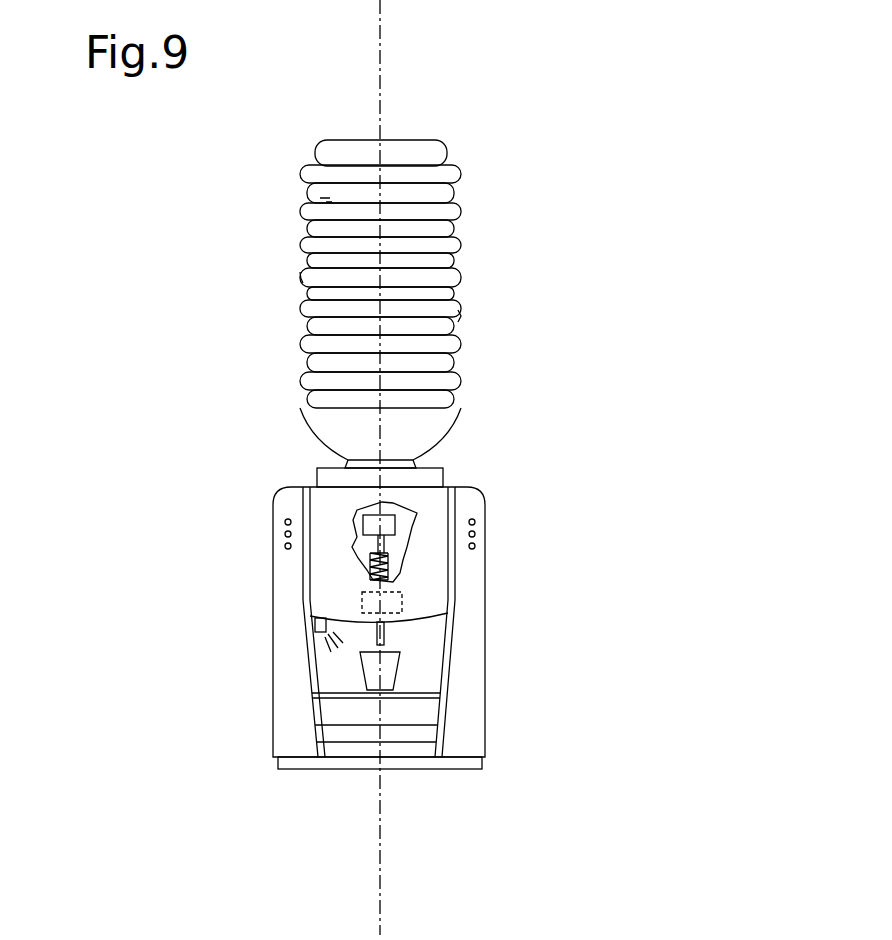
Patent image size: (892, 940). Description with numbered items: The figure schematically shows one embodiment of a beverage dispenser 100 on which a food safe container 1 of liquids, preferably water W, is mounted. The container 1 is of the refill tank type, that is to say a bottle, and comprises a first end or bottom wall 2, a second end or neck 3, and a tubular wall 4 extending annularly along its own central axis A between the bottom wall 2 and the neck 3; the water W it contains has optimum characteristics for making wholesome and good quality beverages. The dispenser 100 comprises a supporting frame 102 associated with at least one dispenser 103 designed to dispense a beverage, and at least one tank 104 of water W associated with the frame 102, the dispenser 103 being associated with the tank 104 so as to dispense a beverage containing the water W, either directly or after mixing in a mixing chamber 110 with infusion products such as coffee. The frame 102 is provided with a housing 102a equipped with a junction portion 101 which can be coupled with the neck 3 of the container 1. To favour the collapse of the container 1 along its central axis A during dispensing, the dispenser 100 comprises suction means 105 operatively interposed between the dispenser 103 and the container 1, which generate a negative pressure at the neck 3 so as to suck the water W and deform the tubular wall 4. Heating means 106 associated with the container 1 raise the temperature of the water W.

The central axis A is at (382, 110).
The container 1 is at (470, 227).
The bottom wall 2 is at (454, 134).
The neck 3 is at (323, 446).
The tubular wall 4 is at (303, 280).
The water W is at (313, 199).
The beverage dispenser 100 is at (580, 500).
The junction portion 101 is at (325, 465).
The supporting frame 102 is at (265, 680).
The housing 102a is at (305, 477).
The dispenser 103 is at (385, 631).
The tank 104 is at (464, 316).
The suction means 105 is at (372, 522).
The heating means 106 is at (370, 557).
The mixing chamber 110 is at (405, 598).